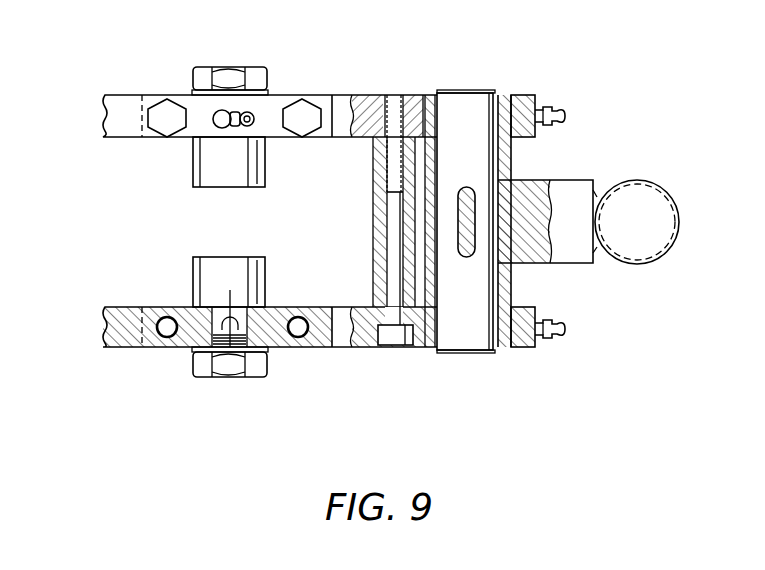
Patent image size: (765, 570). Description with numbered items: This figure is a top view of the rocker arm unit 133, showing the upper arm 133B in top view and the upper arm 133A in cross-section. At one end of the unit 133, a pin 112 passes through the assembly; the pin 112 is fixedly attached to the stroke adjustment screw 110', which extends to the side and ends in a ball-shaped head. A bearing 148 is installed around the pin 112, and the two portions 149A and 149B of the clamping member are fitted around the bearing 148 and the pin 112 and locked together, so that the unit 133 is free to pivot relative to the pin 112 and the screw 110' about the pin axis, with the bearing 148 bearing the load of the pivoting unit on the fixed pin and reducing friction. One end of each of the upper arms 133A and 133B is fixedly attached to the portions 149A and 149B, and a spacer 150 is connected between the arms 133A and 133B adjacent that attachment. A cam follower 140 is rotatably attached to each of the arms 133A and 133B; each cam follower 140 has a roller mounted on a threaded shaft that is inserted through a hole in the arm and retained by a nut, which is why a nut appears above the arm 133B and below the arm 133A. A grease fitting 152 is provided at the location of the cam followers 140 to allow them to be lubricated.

The stroke adjustment screw 110' is at (618, 221).
The pin 112 is at (475, 90).
The rocker arm unit 133 is at (338, 229).
The upper arm 133A is at (125, 343).
The upper arm 133B is at (132, 103).
The cam follower 140 is at (207, 175).
The bearing 148 is at (430, 95).
The portion of member 149A is at (525, 95).
The portion of member 149B is at (523, 347).
The spacer 150 is at (377, 193).
The grease fitting 152 is at (252, 112).